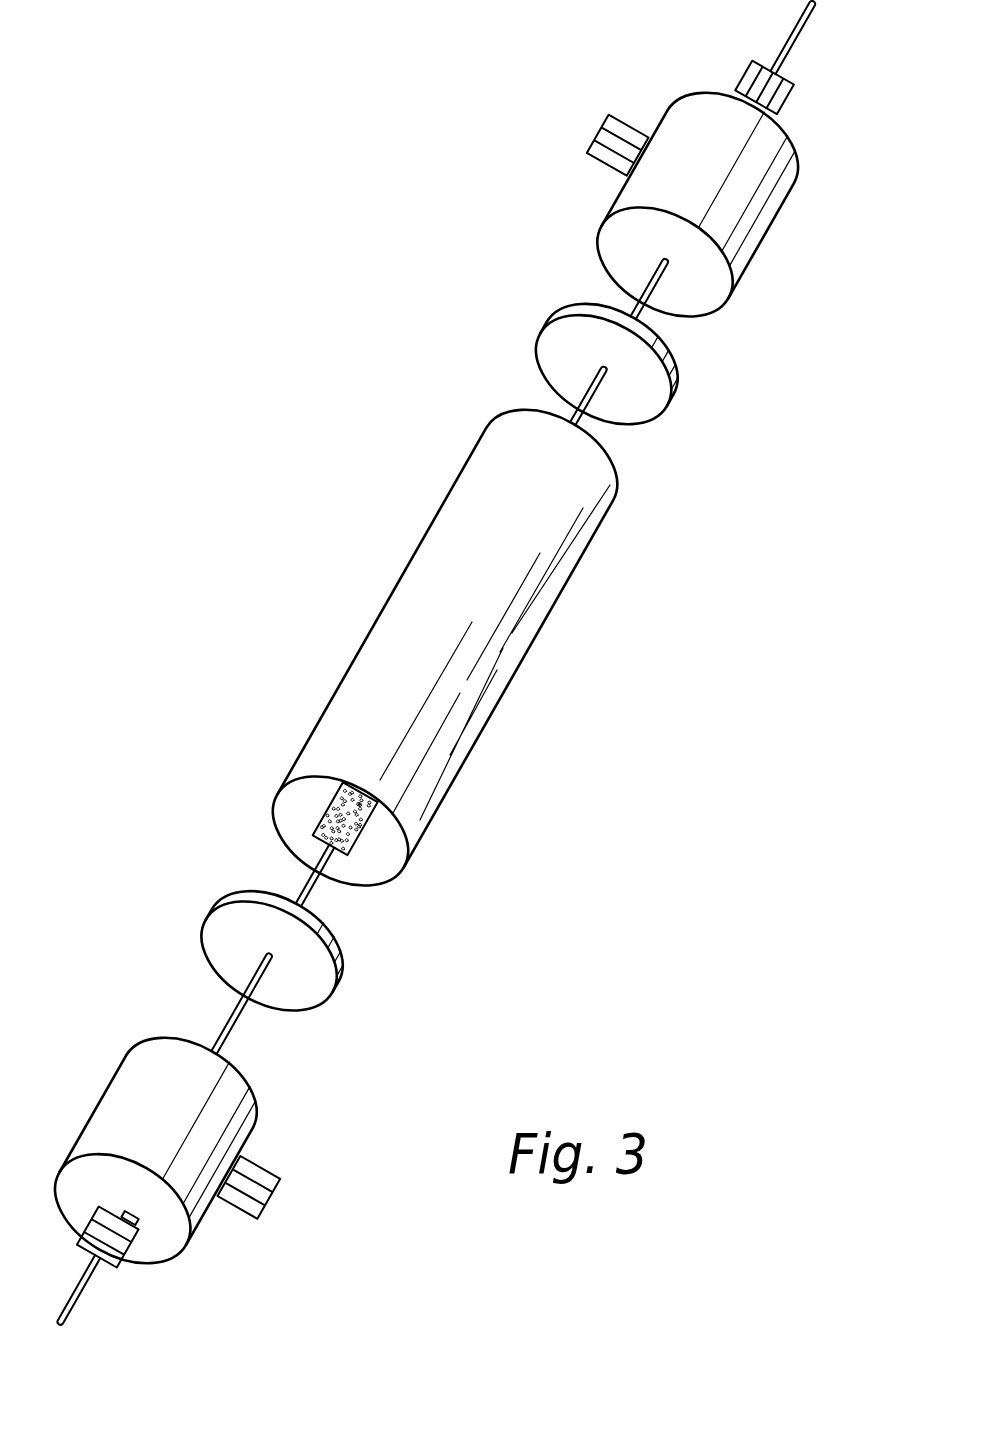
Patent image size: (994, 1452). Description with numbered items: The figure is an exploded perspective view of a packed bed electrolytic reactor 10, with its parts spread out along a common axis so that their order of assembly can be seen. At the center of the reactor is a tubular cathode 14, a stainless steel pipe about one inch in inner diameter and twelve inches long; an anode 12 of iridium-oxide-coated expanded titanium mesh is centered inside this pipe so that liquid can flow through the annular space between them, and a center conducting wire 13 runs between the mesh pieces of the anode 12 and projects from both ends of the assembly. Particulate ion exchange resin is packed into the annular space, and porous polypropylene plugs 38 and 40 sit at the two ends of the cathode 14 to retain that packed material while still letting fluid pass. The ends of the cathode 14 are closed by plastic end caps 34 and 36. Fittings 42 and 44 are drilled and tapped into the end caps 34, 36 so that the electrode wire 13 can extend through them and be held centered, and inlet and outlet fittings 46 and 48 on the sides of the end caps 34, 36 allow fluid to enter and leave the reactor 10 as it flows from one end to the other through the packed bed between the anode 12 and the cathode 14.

The packed bed electrolytic reactor 10 is at (290, 581).
The anode 12 is at (324, 807).
The center conducting wire 13 is at (592, 388).
The cathode 14 is at (455, 685).
The end cap 34 is at (220, 1115).
The end cap 36 is at (742, 193).
The porous polypropylene plug 38 is at (572, 308).
The porous polypropylene plug 40 is at (233, 893).
The fitting 42 is at (127, 1240).
The fitting 44 is at (777, 103).
The inlet fitting 46 is at (257, 1220).
The outlet fitting 48 is at (607, 168).